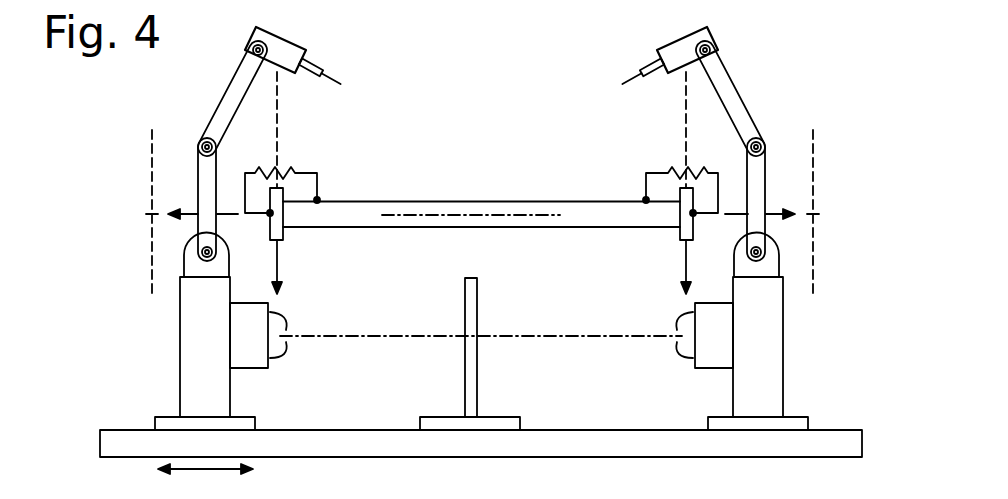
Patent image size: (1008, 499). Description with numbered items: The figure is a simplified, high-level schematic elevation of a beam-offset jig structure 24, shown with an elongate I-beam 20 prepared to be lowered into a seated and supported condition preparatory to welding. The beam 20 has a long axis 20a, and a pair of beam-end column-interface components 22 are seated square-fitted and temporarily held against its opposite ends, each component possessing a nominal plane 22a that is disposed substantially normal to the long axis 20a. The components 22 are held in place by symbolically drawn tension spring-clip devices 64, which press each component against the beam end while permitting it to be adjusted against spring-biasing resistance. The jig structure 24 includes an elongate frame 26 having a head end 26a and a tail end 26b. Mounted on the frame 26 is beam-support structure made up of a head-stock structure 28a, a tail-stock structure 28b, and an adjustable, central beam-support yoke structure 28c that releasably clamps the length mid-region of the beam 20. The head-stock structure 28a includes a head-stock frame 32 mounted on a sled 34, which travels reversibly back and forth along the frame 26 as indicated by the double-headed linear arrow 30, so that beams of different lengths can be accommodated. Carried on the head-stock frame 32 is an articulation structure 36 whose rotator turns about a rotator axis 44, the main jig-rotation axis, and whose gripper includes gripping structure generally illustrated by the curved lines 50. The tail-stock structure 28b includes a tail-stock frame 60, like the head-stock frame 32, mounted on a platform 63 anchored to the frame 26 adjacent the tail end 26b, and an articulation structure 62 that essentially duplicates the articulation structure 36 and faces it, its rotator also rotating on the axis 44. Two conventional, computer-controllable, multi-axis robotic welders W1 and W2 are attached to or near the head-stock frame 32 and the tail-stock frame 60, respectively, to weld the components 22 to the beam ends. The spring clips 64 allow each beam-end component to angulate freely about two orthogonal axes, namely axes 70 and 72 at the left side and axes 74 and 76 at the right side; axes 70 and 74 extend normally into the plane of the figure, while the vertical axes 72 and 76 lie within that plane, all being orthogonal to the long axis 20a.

The I-beam 20 is at (445, 202).
The long axis 20a is at (388, 217).
The beam-end column-interface components 22 is at (281, 234).
The nominal plane 22a is at (355, 123).
The beam-offset jig structure 24 is at (97, 282).
The elongate frame 26 is at (478, 448).
The head end of frame 26a is at (125, 442).
The tail end of frame 26b is at (909, 423).
The head-stock structure 28a is at (219, 352).
The tail-stock structure 28b is at (728, 353).
The beam-support yoke structure 28c is at (560, 290).
The double-headed linear arrow 30 is at (190, 473).
The head-stock frame 32 is at (198, 338).
The sled 34 is at (243, 417).
The articulation structure 36 is at (300, 312).
The rotator axis 44 is at (513, 330).
The gripping structure 50 is at (284, 354).
The tail-stock frame 60 is at (773, 385).
The articulation structure 62 is at (672, 368).
The platform 63 is at (710, 427).
The tension spring-clip devices 64 is at (297, 173).
The angulation axis 70 is at (149, 211).
The vertical angulation axis 72 is at (150, 160).
The angulation axis 74 is at (816, 210).
The vertical angulation axis 76 is at (816, 152).
The robotic welder W1 is at (344, 37).
The robotic welder W2 is at (628, 38).